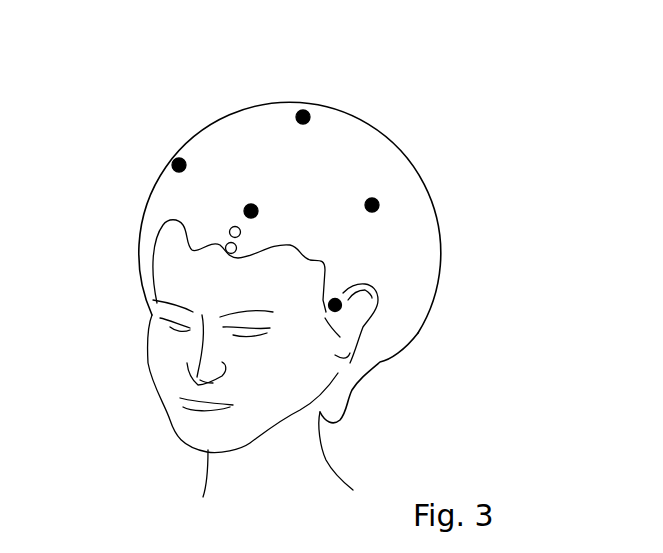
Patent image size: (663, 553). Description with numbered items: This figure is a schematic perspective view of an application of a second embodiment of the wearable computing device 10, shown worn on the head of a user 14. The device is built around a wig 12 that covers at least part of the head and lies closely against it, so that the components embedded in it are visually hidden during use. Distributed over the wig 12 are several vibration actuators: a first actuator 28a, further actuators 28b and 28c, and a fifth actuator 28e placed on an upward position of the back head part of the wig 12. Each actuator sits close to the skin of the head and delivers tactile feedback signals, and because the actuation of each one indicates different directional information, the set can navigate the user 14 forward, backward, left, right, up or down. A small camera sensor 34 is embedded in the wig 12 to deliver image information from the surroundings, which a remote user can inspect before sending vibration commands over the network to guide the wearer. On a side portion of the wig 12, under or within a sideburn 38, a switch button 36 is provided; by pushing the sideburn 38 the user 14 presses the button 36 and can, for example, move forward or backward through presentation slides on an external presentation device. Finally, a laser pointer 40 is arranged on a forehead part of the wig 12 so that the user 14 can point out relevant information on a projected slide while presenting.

The wearable computing device 10 is at (448, 92).
The wig 12 is at (235, 118).
The user 14 is at (163, 357).
The first actuator 28a is at (249, 205).
The further actuator 28b is at (178, 164).
The further actuator 28c is at (375, 200).
The fifth actuator 28e is at (303, 110).
The camera sensor 34 is at (230, 226).
The switch button 36 is at (341, 307).
The sideburn 38 is at (340, 278).
The laser pointer 40 is at (226, 245).